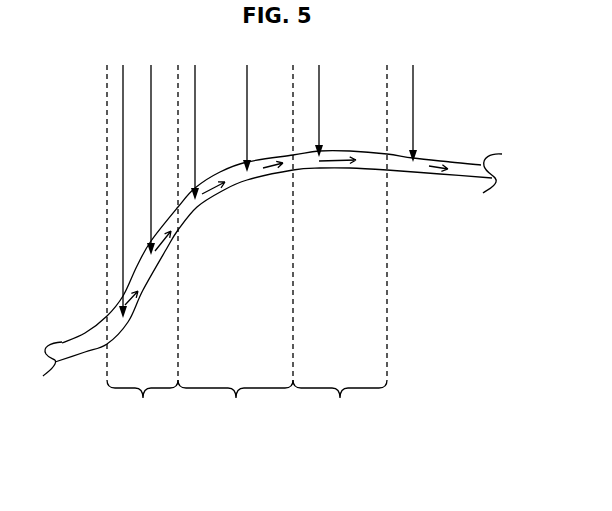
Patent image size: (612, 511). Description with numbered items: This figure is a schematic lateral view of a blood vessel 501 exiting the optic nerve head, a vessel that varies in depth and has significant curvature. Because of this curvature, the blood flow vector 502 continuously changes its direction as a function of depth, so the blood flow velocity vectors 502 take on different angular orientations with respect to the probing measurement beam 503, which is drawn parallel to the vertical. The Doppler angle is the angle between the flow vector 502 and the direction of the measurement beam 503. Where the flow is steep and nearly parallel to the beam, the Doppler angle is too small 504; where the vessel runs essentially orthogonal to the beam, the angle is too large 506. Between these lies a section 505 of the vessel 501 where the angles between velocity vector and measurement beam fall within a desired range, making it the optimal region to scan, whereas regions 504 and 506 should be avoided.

The blood vessel 501 is at (462, 183).
The blood flow vector 502 is at (428, 170).
The measurement beam 503 is at (421, 98).
The region where the Doppler angle is too small 504 is at (142, 270).
The section of optimal Doppler angle 505 is at (235, 270).
The region where the Doppler angle is too large 506 is at (340, 270).